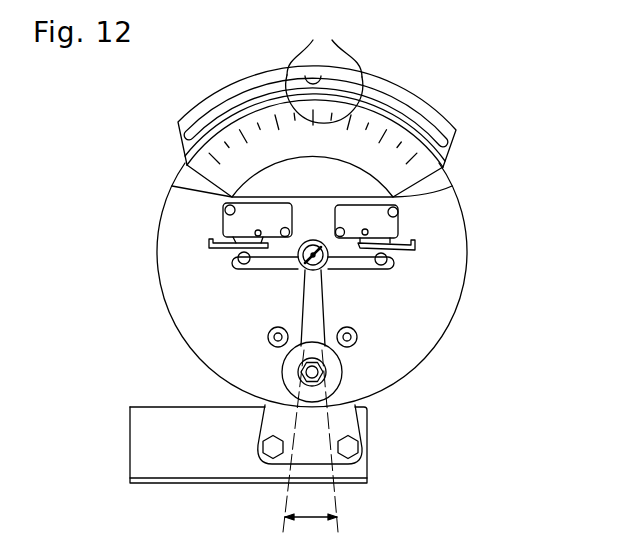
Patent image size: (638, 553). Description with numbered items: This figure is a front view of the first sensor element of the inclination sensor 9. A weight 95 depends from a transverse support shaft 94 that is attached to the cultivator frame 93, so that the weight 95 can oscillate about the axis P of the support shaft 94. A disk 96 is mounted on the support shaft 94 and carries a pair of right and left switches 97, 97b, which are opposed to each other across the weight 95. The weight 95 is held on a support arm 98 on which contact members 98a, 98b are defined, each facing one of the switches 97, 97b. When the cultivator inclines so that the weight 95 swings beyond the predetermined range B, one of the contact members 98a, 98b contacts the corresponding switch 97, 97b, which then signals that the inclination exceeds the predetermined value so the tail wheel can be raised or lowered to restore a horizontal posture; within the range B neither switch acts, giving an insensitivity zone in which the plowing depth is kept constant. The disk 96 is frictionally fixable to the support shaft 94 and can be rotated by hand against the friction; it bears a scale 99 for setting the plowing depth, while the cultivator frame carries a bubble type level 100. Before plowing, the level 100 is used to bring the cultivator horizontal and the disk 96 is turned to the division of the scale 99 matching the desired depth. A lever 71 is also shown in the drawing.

The inclination sensor 9 is at (456, 111).
The actuating lever 71 is at (198, 244).
The cultivator frame 93 is at (353, 432).
The transverse support shaft 94 is at (300, 262).
The weight 95 is at (337, 372).
The disk 96 is at (427, 322).
The switch 97 is at (225, 227).
The switch 97b is at (398, 230).
The support arm 98 is at (307, 308).
The contact member 98a is at (237, 267).
The contact member 98b is at (330, 268).
The scale 99 is at (324, 70).
The bubble type level 100 is at (186, 130).
The axis P is at (325, 270).
The predetermined range B is at (310, 447).